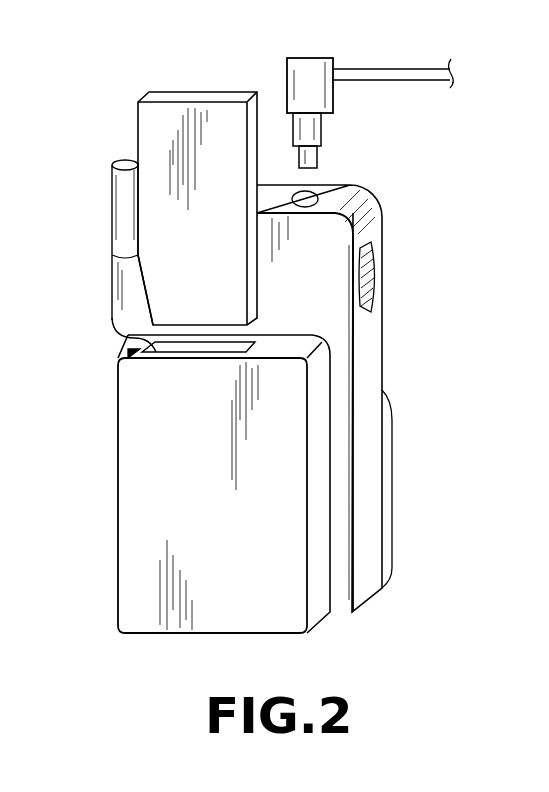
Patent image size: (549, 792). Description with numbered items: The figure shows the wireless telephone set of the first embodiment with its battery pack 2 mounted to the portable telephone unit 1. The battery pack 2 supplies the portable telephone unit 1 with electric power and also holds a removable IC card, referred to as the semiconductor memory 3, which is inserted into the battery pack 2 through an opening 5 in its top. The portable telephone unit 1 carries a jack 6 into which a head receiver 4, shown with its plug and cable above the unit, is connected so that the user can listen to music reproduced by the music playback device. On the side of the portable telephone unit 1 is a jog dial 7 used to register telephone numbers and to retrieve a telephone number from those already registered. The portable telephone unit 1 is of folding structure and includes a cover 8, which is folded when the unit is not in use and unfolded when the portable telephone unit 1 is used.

The portable telephone unit 1 is at (370, 341).
The battery pack 2 is at (126, 409).
The semiconductor memory 3 is at (197, 100).
The head receiver 4 is at (310, 57).
The opening 5 is at (112, 325).
The jack 6 is at (318, 197).
The jog dial 7 is at (377, 266).
The cover 8 is at (386, 455).